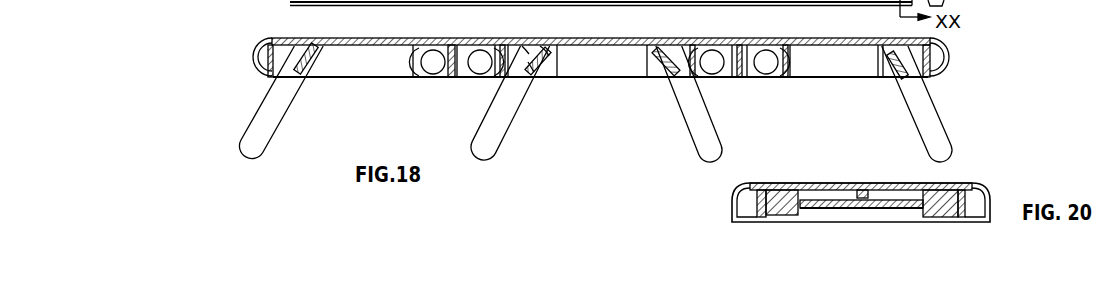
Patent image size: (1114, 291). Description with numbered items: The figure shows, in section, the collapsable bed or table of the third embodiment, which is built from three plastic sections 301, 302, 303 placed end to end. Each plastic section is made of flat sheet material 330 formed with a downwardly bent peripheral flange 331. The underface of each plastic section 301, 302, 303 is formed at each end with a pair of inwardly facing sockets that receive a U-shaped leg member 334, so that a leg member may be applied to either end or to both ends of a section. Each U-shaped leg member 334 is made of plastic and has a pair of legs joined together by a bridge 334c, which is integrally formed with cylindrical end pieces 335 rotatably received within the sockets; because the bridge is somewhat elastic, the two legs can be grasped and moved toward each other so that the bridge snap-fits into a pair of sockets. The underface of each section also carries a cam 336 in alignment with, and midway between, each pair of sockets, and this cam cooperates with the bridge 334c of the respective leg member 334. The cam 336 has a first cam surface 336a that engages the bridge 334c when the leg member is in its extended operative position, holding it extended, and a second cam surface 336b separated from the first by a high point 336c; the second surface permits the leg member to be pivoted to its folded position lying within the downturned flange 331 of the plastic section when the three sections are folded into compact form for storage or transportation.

In FIG. 18, the plastic section 301 is at (348, 36).
In FIG. 18, the plastic section 302 is at (620, 44).
In FIG. 18, the plastic section 303 is at (786, 43).
In FIG. 20, the plastic section 303 is at (785, 182).
In FIG. 18, the flat sheet material 330 is at (362, 37).
In FIG. 18, the peripheral flange 331 is at (373, 68).
In FIG. 20, the peripheral flange 331 is at (733, 212).
In FIG. 18, the U-shaped leg member 334 is at (279, 112).
In FIG. 20, the bridge 334c is at (923, 186).
In FIG. 20, the cylindrical end piece 335 is at (794, 185).
In FIG. 18, the cam 336 is at (537, 50).
In FIG. 20, the cam 336 is at (869, 180).
In FIG. 18, the first cam surface 336a is at (547, 48).
In FIG. 18, the second cam surface 336b is at (530, 47).
In FIG. 18, the high point 336c is at (535, 70).